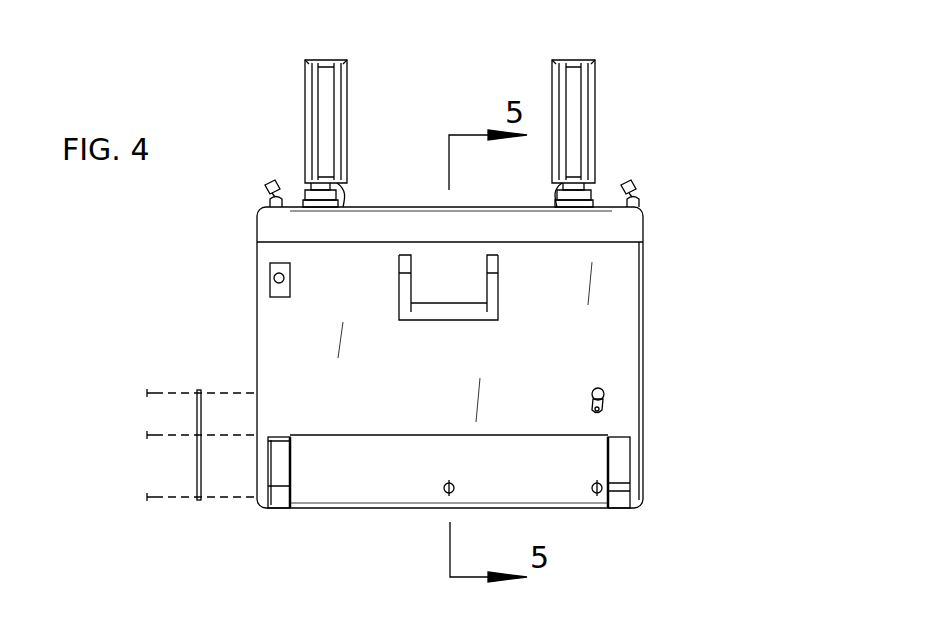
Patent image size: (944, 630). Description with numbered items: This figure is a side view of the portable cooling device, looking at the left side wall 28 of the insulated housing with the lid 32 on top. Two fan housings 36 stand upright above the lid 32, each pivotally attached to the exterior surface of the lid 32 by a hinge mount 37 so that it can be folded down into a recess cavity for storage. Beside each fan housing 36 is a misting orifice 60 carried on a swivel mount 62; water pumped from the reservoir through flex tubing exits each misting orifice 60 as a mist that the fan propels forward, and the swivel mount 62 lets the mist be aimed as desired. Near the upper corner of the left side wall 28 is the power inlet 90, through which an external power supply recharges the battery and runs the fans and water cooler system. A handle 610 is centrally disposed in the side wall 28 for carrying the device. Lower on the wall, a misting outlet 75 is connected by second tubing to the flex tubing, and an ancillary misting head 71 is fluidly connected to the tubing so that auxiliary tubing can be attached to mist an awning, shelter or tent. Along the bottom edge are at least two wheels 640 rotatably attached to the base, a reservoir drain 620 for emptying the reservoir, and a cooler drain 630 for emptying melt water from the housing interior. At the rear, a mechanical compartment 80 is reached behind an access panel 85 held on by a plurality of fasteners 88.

The left side wall 28 is at (623, 341).
The lid 32 is at (395, 218).
The fan housing 36 is at (575, 65).
The hinge mount 37 is at (590, 187).
The misting orifice 60 is at (631, 189).
The swivel mount 62 is at (636, 200).
The power inlet 90 is at (274, 278).
The handle 610 is at (494, 288).
The misting outlet 75 is at (604, 391).
The ancillary misting head 71 is at (603, 412).
The wheels 640 is at (277, 503).
The cooler drain 630 is at (445, 492).
The reservoir drain 620 is at (597, 496).
The fasteners 88 is at (150, 435).
The access panel 85 is at (197, 457).
The mechanical compartment 80 is at (257, 468).